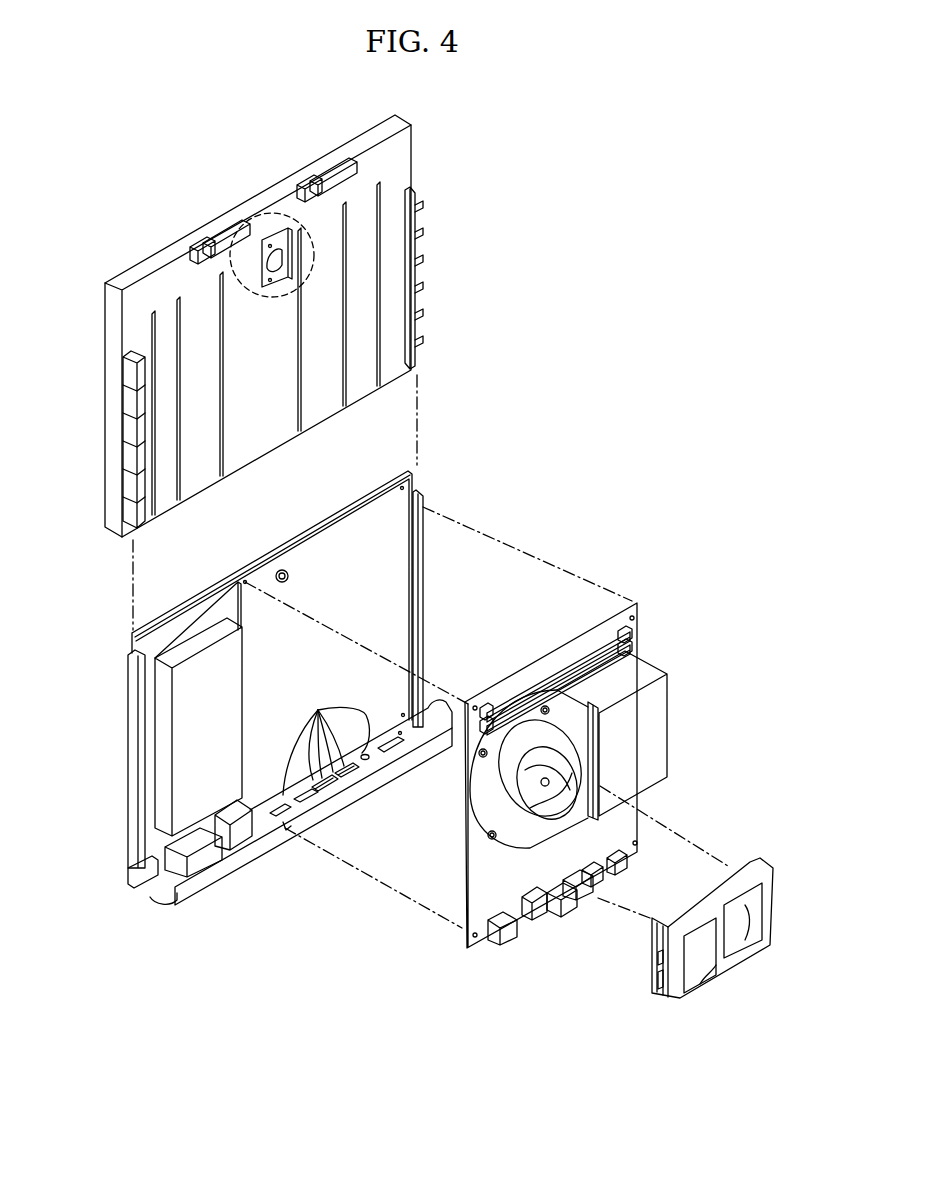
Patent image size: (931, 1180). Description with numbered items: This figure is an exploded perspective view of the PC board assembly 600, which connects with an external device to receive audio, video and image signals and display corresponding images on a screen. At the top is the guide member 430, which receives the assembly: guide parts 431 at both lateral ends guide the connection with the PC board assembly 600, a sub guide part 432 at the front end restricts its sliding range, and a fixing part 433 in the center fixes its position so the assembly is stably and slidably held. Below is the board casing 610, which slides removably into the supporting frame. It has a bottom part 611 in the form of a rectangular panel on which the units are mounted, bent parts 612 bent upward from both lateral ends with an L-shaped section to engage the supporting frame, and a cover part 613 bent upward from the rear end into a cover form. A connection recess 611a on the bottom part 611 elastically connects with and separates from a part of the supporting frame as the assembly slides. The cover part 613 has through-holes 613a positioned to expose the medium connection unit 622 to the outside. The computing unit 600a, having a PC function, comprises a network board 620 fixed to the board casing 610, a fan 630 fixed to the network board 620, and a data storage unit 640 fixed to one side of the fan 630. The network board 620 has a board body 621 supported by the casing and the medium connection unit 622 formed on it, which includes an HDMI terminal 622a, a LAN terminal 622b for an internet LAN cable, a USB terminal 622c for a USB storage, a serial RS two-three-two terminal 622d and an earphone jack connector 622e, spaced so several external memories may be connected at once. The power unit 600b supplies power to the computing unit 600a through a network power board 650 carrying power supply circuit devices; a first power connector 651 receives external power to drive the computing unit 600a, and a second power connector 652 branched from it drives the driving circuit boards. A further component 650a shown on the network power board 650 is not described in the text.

The guide member 430 is at (402, 165).
The guide parts 431 is at (418, 270).
The sub guide part 432 is at (322, 185).
The fixing part 433 is at (279, 298).
The PC board assembly 600 is at (612, 485).
The computing unit 600a is at (650, 585).
The power unit 600b is at (115, 750).
The board casing 610 is at (437, 599).
The bottom part 611 is at (358, 510).
The connection recess 611a is at (286, 571).
The bent parts 612 is at (423, 512).
The cover part 613 is at (357, 793).
The through-holes 613a is at (326, 739).
The network board 620 is at (648, 633).
The board body 621 is at (630, 815).
The medium connection unit 622 is at (587, 914).
The HDMI terminal 622a is at (503, 937).
The LAN terminal 622b is at (542, 915).
The USB terminal 622c is at (577, 905).
The RS232 terminal 622d is at (628, 862).
The earphone jack connector 622e is at (603, 880).
The fan 630 is at (684, 702).
The data storage unit 640 is at (768, 848).
The network power board 650 is at (188, 743).
The power module housing 650a is at (187, 652).
The first power connector 651 is at (242, 833).
The second power connector 652 is at (202, 857).